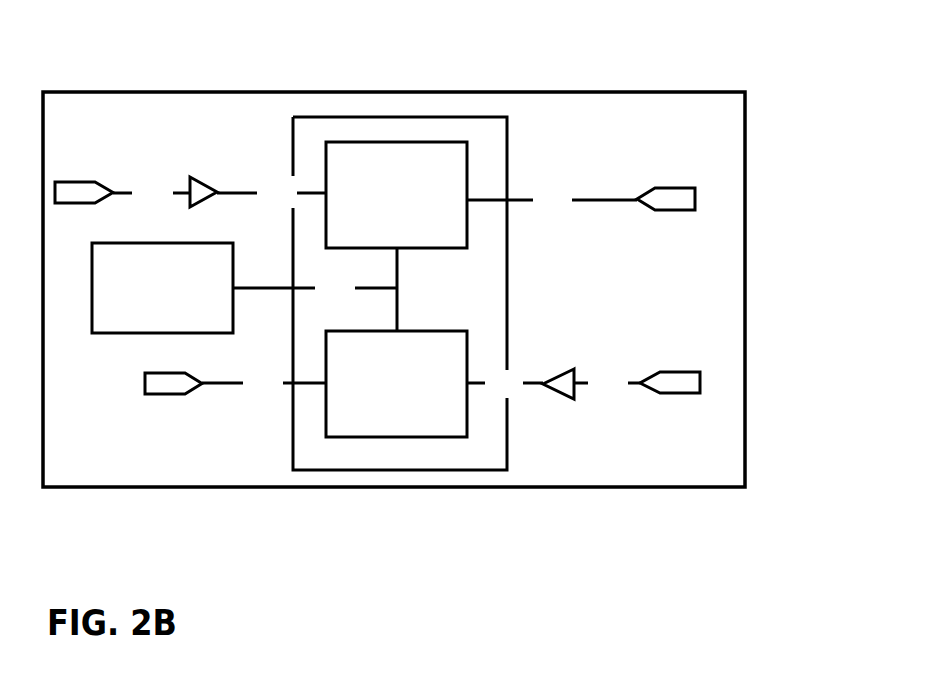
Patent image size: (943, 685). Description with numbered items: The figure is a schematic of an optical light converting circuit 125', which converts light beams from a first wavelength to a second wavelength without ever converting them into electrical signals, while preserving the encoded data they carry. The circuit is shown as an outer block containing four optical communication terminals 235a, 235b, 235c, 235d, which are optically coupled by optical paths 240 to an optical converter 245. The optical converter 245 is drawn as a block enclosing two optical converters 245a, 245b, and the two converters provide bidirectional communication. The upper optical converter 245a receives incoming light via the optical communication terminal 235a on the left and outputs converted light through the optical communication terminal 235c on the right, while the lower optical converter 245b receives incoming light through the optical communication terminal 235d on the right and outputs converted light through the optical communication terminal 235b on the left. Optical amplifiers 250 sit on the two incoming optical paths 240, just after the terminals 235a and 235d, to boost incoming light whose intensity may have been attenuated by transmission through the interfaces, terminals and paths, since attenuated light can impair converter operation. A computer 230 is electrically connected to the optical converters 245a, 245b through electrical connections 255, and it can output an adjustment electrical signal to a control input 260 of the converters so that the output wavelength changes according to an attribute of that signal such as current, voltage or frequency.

The optical light converting circuit 125' is at (435, 249).
The computer 230 is at (162, 288).
The optical communication terminal 235a is at (58, 183).
The optical communication terminal 235b is at (143, 393).
The optical communication terminal 235c is at (697, 191).
The optical communication terminal 235d is at (700, 393).
The optical path 240 is at (376, 288).
The optical converter 245 is at (398, 472).
The optical converter 245a is at (396, 195).
The optical converter 245b is at (396, 384).
The optical amplifier 250 is at (208, 185).
The electrical connection 255 is at (315, 288).
The control input 260 is at (403, 330).